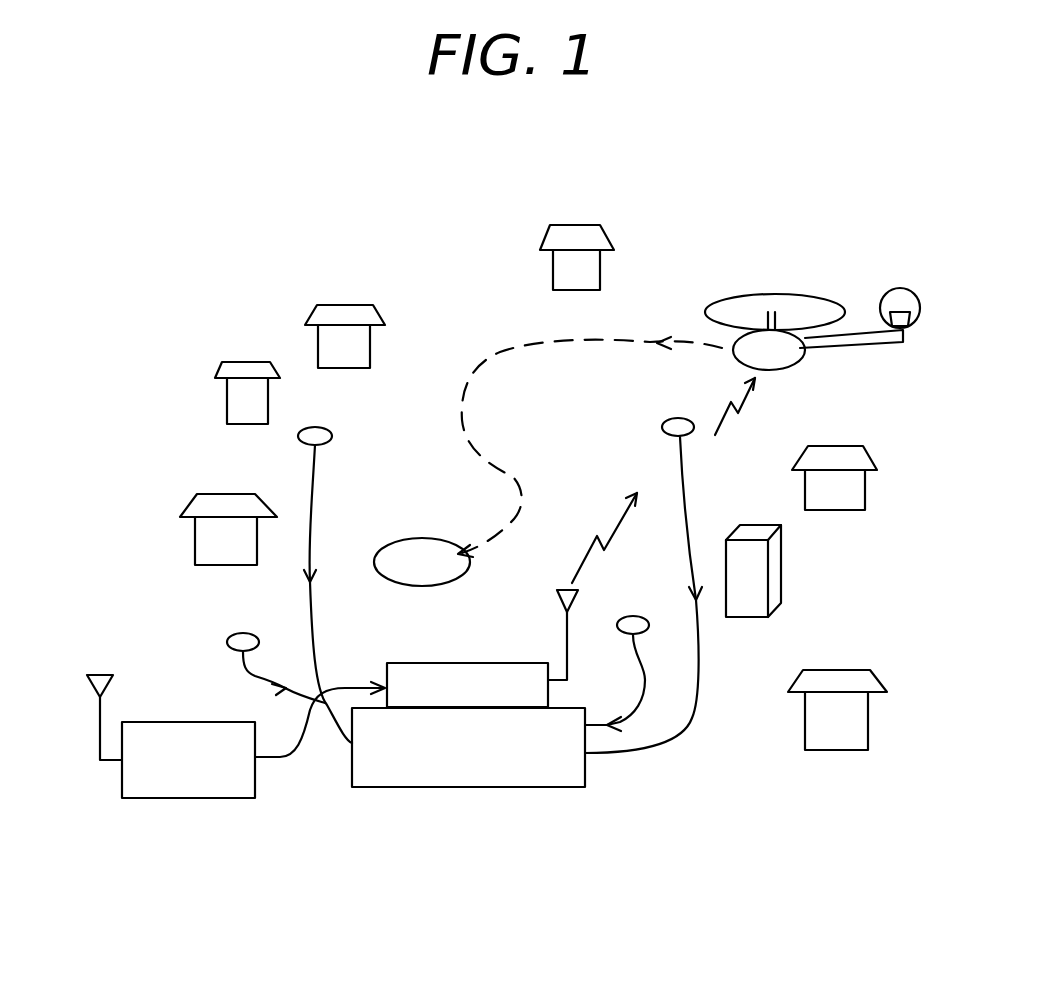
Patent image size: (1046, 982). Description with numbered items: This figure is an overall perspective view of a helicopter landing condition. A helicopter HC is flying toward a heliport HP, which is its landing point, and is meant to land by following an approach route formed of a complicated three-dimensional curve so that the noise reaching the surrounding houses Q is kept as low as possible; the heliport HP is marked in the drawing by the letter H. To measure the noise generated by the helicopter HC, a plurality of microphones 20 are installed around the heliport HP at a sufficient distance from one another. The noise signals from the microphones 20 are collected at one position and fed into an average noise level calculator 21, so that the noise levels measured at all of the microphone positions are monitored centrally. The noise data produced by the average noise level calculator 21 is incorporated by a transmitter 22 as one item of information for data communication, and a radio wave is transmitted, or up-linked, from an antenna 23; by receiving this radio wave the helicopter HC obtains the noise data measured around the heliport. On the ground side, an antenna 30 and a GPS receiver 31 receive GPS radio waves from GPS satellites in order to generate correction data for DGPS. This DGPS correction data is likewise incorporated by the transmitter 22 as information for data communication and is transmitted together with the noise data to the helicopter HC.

The microphones 20 is at (322, 433).
The average noise level calculator 21 is at (457, 775).
The transmitter 22 is at (422, 668).
The antenna 23 is at (555, 598).
The antenna 30 is at (103, 708).
The GPS receiver 31 is at (187, 787).
The houses Q is at (555, 238).
The helicopter HC is at (787, 358).
The heliport HP is at (396, 550).
The heliport mark H is at (422, 562).